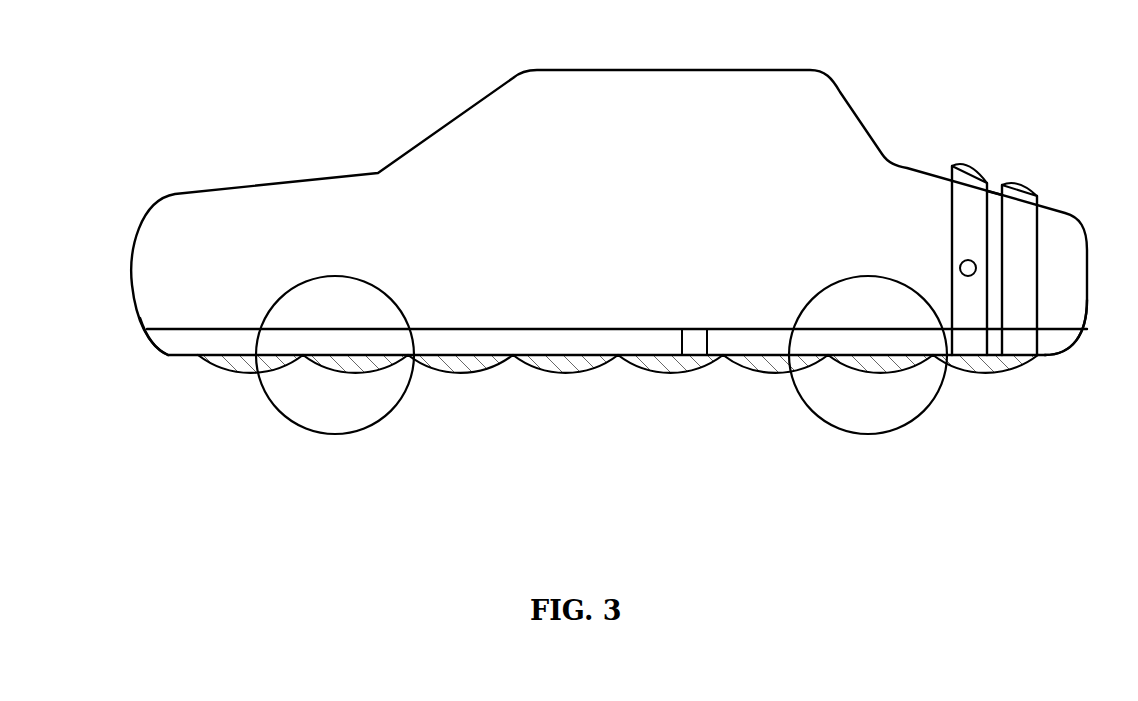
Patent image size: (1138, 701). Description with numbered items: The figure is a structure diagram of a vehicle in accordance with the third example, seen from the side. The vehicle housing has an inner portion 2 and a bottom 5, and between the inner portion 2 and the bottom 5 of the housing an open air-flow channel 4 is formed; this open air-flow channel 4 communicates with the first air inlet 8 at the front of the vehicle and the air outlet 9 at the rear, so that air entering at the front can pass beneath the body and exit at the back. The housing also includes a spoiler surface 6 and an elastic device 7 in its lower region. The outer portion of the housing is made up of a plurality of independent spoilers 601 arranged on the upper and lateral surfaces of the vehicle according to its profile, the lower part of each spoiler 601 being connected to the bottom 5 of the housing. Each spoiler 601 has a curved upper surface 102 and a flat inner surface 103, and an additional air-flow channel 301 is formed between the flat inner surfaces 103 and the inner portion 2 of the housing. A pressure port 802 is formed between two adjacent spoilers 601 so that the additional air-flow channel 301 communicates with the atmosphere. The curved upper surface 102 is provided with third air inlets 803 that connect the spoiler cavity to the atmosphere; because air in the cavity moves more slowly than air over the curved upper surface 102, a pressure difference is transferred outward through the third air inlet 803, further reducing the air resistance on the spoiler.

The inner portion of housing 2 is at (833, 72).
The open air-flow channel 4 is at (567, 345).
The bottom of housing 5 is at (628, 352).
The spoiler surface 6 is at (653, 372).
The elastic device 7 is at (697, 343).
The first air inlet 8 is at (158, 352).
The air outlet 9 is at (1071, 349).
The spoiler 601 is at (965, 212).
The curved upper surface 102 is at (972, 162).
The pressure port 802 is at (997, 180).
The flat inner surface 103 is at (1022, 185).
The additional air-flow channel 301 is at (1033, 193).
The third air inlet 803 is at (975, 278).